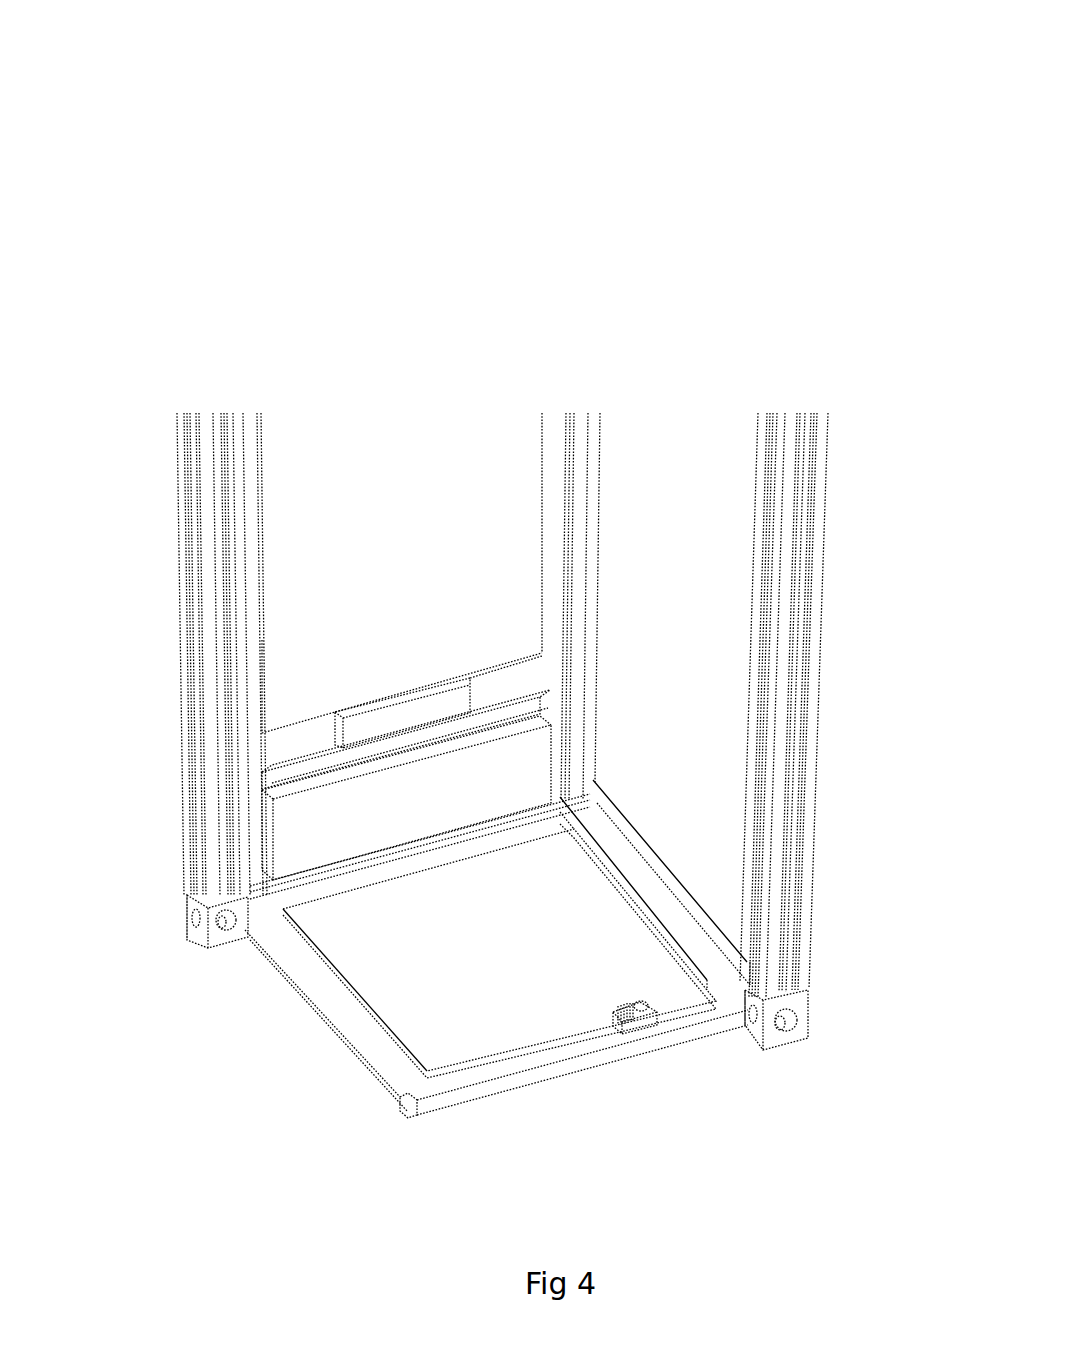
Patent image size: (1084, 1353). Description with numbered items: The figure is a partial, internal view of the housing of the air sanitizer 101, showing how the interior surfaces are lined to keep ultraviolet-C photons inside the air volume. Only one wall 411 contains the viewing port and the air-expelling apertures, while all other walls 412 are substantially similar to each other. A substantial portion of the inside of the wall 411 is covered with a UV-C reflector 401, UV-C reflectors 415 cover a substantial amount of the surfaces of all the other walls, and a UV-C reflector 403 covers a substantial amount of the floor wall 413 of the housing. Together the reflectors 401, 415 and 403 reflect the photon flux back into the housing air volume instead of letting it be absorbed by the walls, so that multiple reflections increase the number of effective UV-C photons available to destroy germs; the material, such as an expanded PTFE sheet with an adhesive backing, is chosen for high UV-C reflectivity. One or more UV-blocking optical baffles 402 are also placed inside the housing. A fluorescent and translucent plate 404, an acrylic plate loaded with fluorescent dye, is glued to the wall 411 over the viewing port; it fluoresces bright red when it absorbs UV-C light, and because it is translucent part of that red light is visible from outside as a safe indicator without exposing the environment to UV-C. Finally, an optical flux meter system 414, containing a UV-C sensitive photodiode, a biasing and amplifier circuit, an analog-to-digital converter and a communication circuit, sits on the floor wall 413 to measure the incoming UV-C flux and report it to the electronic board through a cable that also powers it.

The air sanitizer 101 is at (148, 34).
The UV-C reflector 401 is at (296, 629).
The UV-blocking optical baffles 402 is at (312, 820).
The UV-C reflector 403 is at (390, 980).
The fluorescent and translucent plate 404 is at (362, 724).
The wall 411 is at (548, 677).
The walls 412 is at (695, 907).
The floor wall 413 is at (472, 1097).
The optical flux meter system 414 is at (630, 1000).
The UV-C reflectors 415 is at (678, 575).